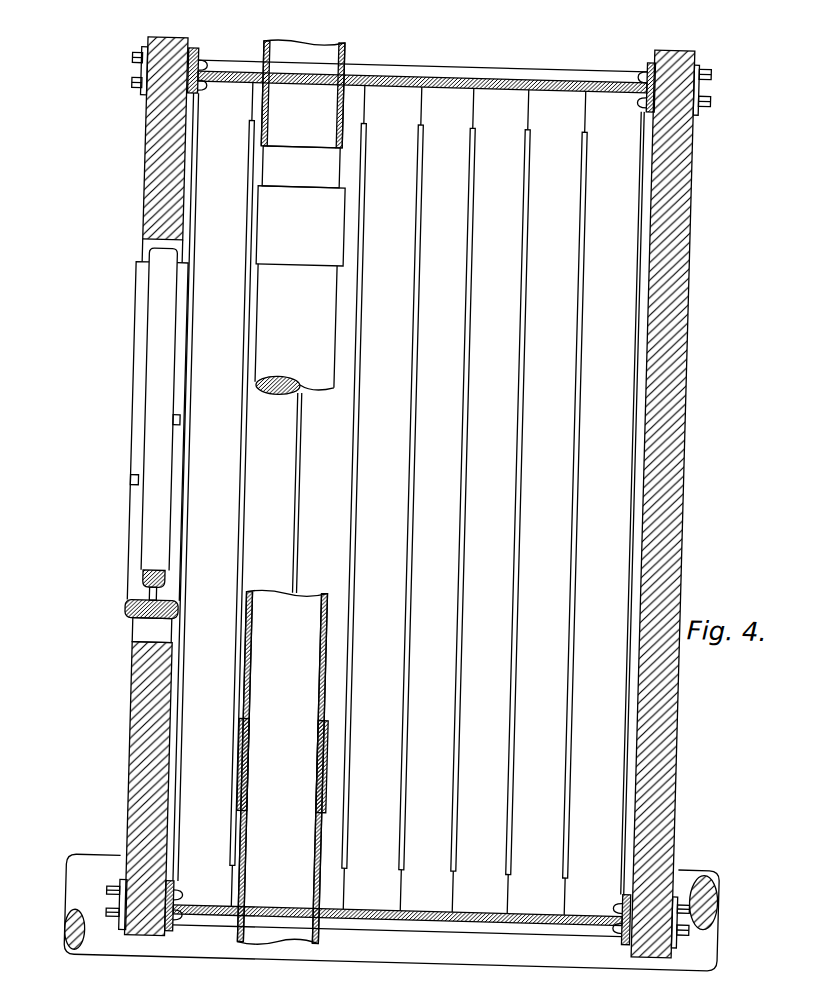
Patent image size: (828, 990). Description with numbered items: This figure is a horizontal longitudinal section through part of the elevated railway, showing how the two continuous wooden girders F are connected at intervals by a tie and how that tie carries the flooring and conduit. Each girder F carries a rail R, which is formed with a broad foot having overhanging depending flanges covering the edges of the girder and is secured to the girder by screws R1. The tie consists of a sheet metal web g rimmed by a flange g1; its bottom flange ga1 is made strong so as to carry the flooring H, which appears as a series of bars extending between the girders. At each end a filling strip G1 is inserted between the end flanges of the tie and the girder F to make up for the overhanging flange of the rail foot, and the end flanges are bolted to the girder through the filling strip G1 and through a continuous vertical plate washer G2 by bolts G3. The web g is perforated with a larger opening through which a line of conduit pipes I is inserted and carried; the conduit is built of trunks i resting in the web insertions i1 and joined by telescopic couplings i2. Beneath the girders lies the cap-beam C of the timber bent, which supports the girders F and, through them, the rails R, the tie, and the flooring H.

The girder F is at (150, 207).
The rail R is at (157, 433).
The screws R1 is at (178, 427).
The conduit pipes I is at (130, 574).
The trunks i is at (301, 167).
The web insertions i1 is at (288, 604).
The telescopic couplings i2 is at (334, 768).
The flooring H is at (408, 499).
The web g is at (486, 58).
The bottom flange ga1 is at (434, 77).
The filling strip G1 is at (190, 100).
The vertical plate washer G2 is at (134, 100).
The bolts G3 is at (120, 90).
The flange g1 is at (192, 70).
The cap-beam C is at (391, 912).